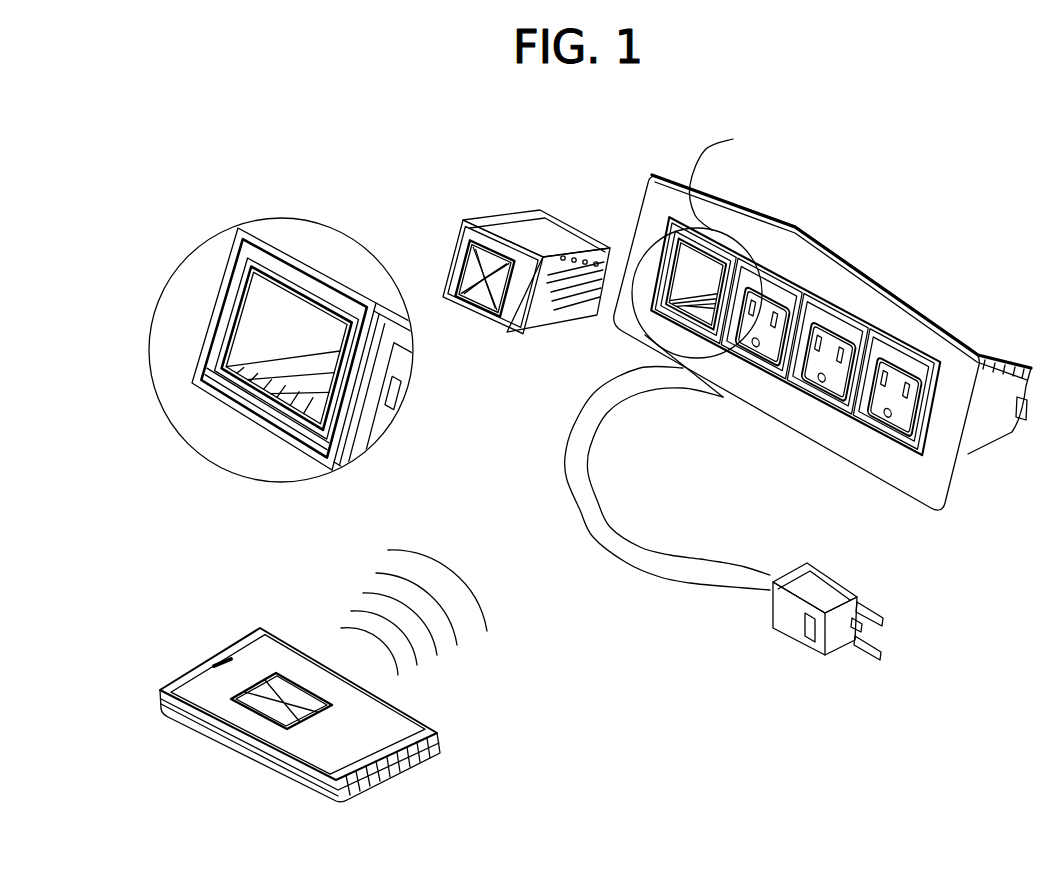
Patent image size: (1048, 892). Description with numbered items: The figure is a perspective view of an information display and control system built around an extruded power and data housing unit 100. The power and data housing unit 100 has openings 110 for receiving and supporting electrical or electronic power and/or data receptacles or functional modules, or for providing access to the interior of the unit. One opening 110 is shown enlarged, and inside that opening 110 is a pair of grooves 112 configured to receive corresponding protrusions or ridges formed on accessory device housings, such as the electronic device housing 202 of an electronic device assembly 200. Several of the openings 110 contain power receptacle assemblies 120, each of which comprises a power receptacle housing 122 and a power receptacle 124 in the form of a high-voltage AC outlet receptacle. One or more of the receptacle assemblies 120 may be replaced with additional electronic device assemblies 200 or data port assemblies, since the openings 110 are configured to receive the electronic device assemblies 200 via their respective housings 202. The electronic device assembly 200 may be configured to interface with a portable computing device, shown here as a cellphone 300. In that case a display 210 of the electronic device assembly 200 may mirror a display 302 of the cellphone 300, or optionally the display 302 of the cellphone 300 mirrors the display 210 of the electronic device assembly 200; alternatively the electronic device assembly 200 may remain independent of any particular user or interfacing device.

The power and data housing unit 100 is at (822, 337).
The opening 110 is at (283, 352).
The grooves 112 is at (287, 348).
The power receptacle assembly 120 is at (827, 402).
The power receptacle housing 122 is at (760, 327).
The power receptacle 124 is at (762, 326).
The electronic device assembly 200 is at (515, 262).
The electronic device housing 202 is at (482, 256).
The display 210 is at (455, 260).
The cellphone 300 is at (323, 688).
The display 302 is at (257, 723).